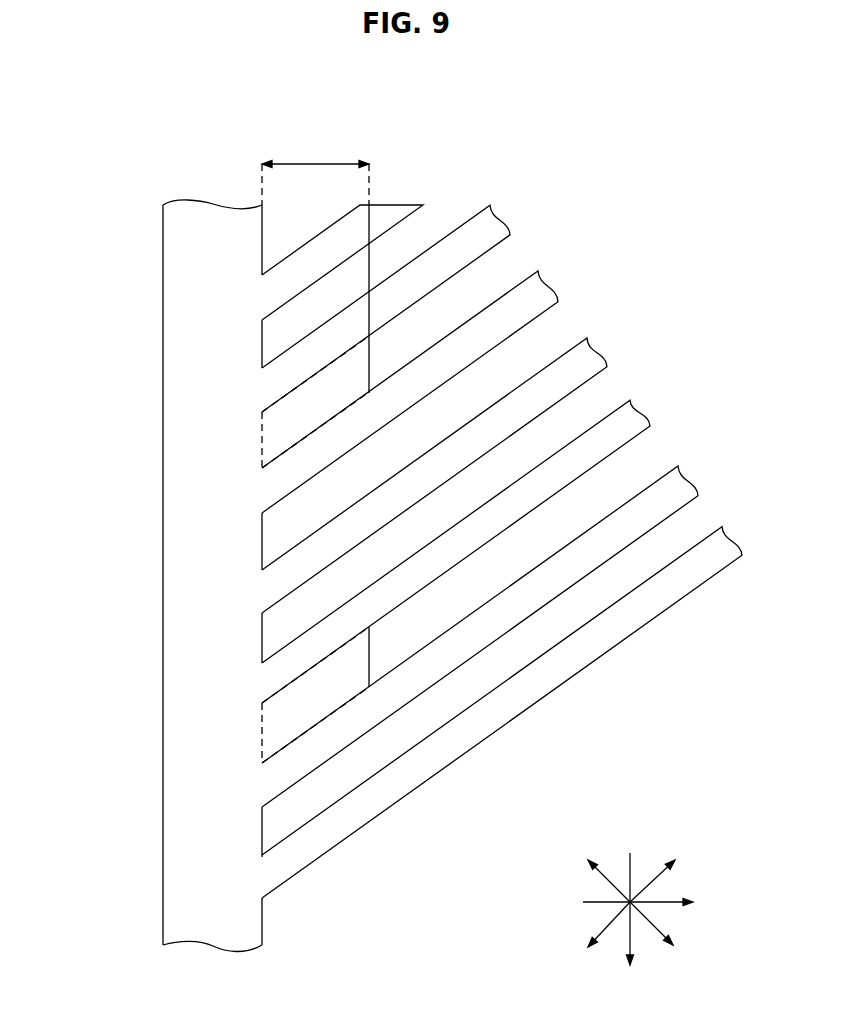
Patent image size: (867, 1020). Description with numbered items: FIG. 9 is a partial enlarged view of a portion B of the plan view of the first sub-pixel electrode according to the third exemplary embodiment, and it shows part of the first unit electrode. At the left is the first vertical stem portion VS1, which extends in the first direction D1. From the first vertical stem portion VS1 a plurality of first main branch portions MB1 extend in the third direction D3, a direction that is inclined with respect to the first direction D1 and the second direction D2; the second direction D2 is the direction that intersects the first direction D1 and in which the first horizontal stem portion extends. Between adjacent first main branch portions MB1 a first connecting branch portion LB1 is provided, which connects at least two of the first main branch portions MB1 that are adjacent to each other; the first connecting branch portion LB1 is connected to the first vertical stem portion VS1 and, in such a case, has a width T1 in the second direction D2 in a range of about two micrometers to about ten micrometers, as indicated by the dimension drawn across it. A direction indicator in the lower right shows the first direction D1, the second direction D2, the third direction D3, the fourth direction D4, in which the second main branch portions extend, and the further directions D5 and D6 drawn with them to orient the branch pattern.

The portion B is at (200, 108).
The first vertical stem portion VS1 is at (207, 566).
The first main branch portions MB1 is at (460, 243).
The first connecting branch portion LB1 is at (317, 397).
The width T1 is at (315, 173).
The first direction D1 is at (632, 922).
The second direction D2 is at (652, 906).
The third direction D3 is at (663, 869).
The fourth direction D4 is at (665, 936).
The fifth direction D5 is at (599, 869).
The sixth direction D6 is at (596, 934).